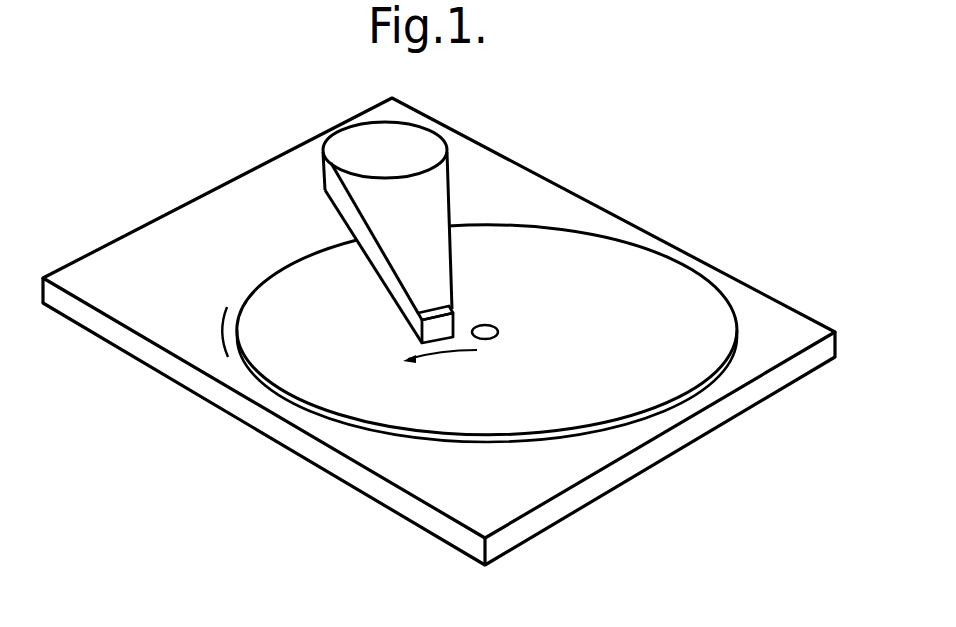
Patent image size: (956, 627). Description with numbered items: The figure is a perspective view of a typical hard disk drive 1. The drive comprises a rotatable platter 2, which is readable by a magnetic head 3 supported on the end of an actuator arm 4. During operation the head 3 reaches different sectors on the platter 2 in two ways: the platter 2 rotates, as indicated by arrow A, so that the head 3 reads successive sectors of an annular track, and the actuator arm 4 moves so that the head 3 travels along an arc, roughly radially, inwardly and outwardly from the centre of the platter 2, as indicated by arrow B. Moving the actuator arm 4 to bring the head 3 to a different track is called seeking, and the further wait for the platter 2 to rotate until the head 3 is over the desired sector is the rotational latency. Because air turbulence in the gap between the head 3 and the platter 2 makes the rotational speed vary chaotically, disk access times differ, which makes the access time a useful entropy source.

The hard disk drive 1 is at (489, 178).
The rotatable platter 2 is at (633, 271).
The magnetic head 3 is at (443, 328).
The actuator arm 4 is at (375, 214).